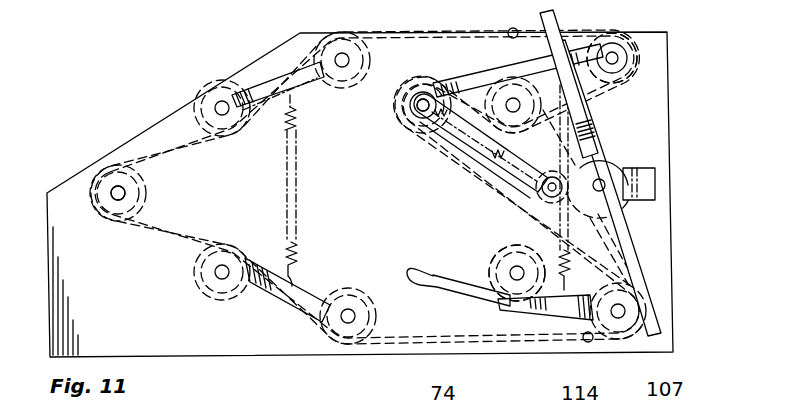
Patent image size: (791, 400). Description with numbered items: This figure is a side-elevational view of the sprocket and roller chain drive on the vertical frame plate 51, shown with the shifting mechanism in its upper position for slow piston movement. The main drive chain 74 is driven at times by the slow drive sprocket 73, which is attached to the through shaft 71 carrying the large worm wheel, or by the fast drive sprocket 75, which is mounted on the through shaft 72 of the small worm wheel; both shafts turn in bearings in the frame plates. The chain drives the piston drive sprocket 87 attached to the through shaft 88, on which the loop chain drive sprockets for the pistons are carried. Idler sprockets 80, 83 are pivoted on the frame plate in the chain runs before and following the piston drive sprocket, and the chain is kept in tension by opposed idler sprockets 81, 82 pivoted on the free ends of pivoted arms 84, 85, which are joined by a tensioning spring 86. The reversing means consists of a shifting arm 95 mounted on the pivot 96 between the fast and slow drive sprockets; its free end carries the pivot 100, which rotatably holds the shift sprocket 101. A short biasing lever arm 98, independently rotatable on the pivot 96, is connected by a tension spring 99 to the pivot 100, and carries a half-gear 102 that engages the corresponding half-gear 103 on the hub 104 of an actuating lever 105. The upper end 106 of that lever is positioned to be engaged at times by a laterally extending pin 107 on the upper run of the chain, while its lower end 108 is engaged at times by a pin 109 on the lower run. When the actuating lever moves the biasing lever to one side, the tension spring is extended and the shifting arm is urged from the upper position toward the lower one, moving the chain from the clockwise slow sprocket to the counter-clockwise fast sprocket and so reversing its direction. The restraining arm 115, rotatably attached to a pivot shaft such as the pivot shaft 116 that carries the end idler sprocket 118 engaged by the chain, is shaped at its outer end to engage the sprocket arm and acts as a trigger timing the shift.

The vertical frame plate 51 is at (673, 248).
The through shaft 71 is at (512, 103).
The through shaft 72 is at (512, 273).
The slow drive sprocket 73 is at (490, 83).
The main drive chain 74 is at (413, 32).
The fast drive sprocket 75 is at (498, 252).
The idler sprocket 80 is at (333, 86).
The idler sprocket 81 is at (210, 83).
The idler sprocket 82 is at (205, 288).
The idler sprocket 83 is at (362, 290).
The pivoted arm 84 is at (271, 77).
The pivoted arm 85 is at (252, 301).
The tensioning spring 86 is at (293, 177).
The piston drive sprocket 87 is at (100, 183).
The through shaft 88 is at (117, 197).
The shifting arm 95 is at (457, 147).
The pivot 96 is at (545, 173).
The biasing lever arm 98 is at (518, 177).
The tension spring 99 is at (492, 173).
The pivot 100 is at (420, 107).
The shift sprocket 101 is at (393, 80).
The half-gear 102 is at (606, 170).
The half-gear 103 is at (610, 143).
The hub 104 is at (600, 204).
The actuating lever 105 is at (597, 117).
The upper end 106 is at (553, 23).
The pin 107 is at (508, 30).
The lower end 108 is at (657, 320).
The pin 109 is at (575, 331).
The restraining arm 115 is at (458, 293).
The pivot shaft 116 is at (613, 60).
The end idler sprocket 118 is at (640, 50).